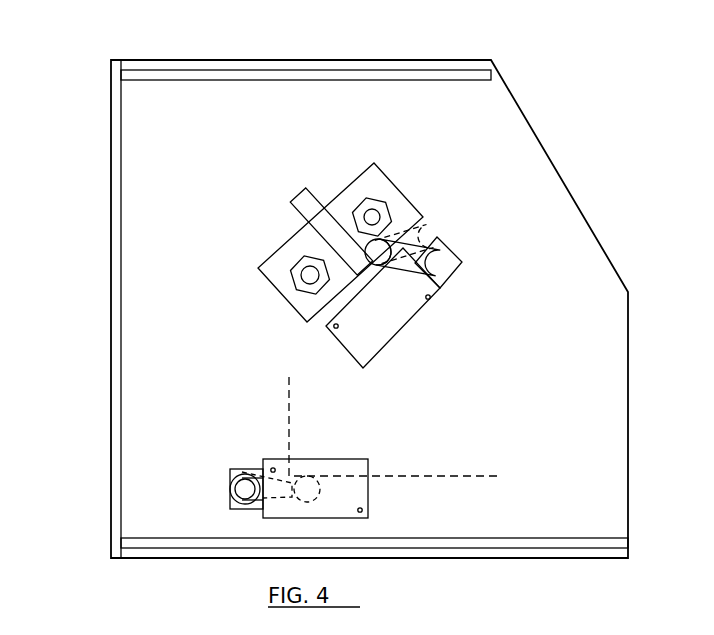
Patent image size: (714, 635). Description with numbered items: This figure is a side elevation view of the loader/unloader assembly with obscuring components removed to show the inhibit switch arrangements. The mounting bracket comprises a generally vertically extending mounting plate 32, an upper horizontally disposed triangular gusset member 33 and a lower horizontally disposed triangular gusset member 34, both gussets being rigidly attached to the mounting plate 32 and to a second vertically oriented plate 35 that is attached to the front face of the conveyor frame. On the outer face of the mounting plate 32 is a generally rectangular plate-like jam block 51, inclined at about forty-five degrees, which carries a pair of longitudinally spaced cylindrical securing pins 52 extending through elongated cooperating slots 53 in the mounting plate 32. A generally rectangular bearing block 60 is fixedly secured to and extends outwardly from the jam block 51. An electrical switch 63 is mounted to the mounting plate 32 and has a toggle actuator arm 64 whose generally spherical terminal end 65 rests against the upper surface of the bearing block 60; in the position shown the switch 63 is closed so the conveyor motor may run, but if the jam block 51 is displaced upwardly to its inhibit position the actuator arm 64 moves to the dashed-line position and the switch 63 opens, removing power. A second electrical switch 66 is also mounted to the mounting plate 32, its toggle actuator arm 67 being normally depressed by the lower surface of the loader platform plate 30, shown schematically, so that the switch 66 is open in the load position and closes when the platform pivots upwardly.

The loader platform plate 30 is at (425, 476).
The mounting plate 32 is at (172, 314).
The upper gusset member 33 is at (159, 74).
The lower gusset member 34 is at (152, 548).
The second vertically oriented plate 35 is at (110, 302).
The jam block 51 is at (365, 173).
The securing pins 52 is at (303, 268).
The slots 53 is at (374, 208).
The bearing block 60 is at (300, 199).
The electrical switch 63 is at (397, 327).
The toggle actuator arm 64 is at (442, 262).
The spherical terminal end 65 is at (388, 242).
The electrical switch 66 is at (363, 495).
The toggle actuator arm 67 is at (278, 500).